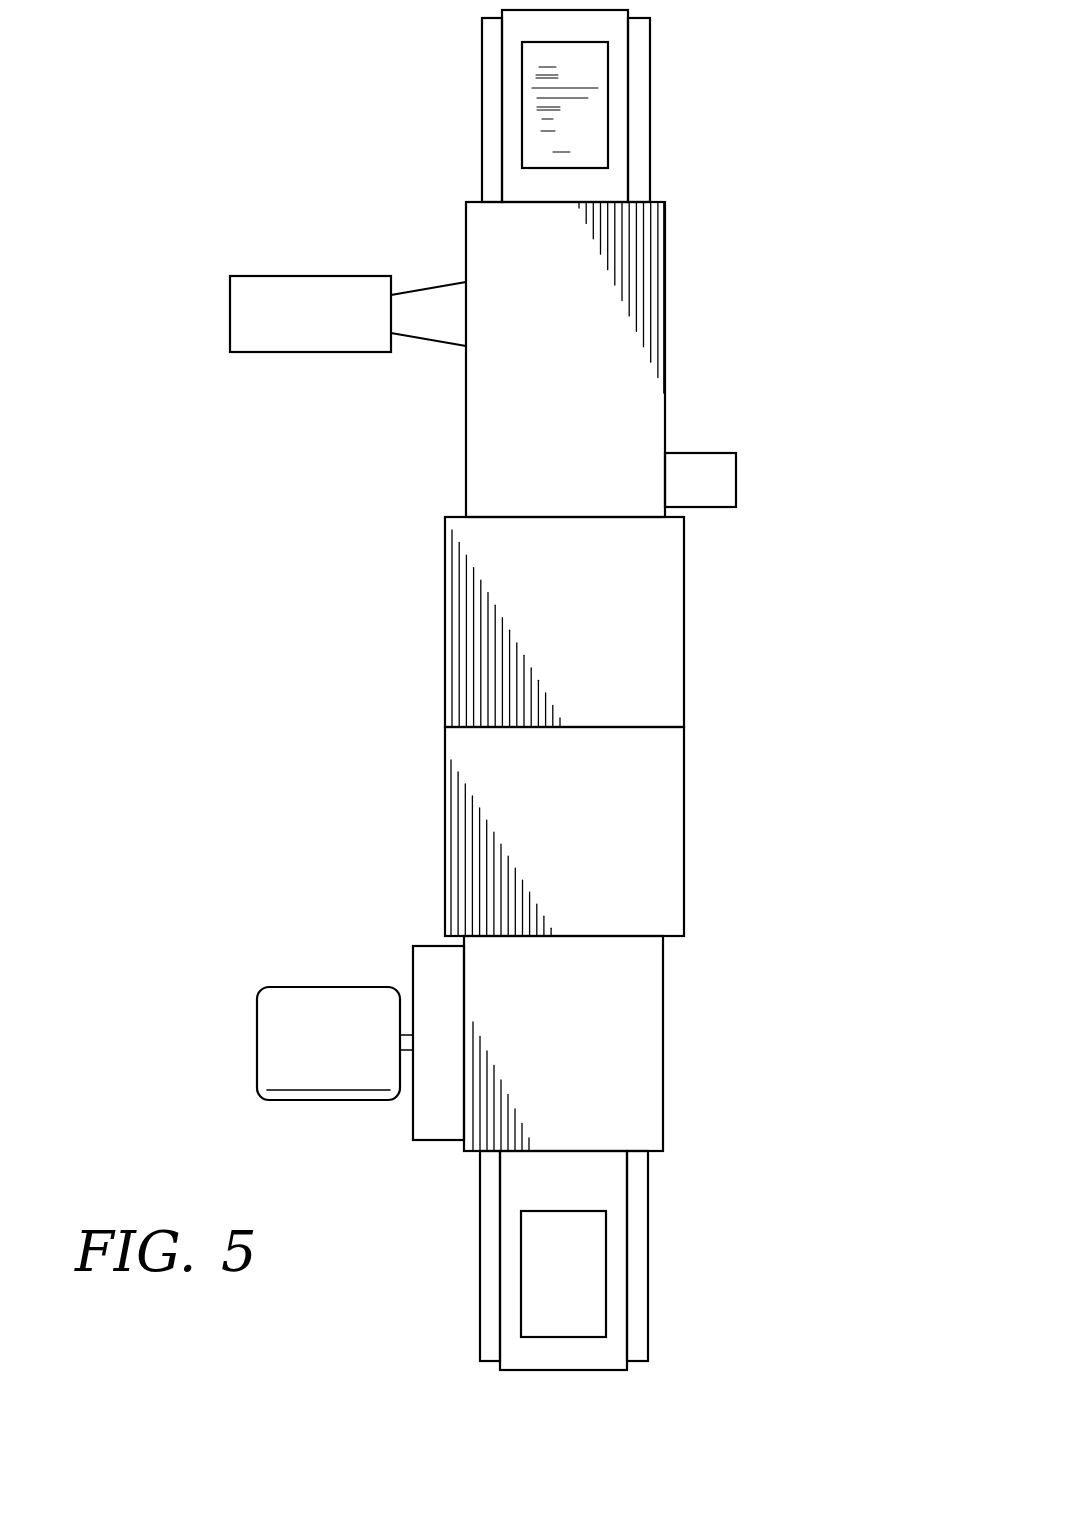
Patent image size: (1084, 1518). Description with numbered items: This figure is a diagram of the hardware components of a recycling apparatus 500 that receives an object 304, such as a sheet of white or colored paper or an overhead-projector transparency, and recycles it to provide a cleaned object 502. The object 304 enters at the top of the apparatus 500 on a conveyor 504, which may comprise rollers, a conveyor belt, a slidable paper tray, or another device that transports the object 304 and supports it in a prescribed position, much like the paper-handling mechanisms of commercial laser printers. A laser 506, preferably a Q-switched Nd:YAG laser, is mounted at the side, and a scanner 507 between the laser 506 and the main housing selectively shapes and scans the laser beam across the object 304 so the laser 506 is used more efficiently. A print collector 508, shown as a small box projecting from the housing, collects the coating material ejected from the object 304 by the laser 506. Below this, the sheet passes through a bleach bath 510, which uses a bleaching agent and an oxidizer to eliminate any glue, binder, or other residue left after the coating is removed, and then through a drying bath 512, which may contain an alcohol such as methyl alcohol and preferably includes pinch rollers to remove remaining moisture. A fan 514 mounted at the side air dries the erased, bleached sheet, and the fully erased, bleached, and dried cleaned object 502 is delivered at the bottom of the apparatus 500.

The recycling apparatus 500 is at (260, 102).
The cleaned object 502 is at (585, 1283).
The conveyor 504 is at (508, 98).
The object 304 is at (595, 72).
The laser 506 is at (299, 275).
The scanner 507 is at (433, 283).
The print collector 508 is at (737, 483).
The bleach bath 510 is at (685, 622).
The drying bath 512 is at (685, 827).
The fan 514 is at (412, 960).